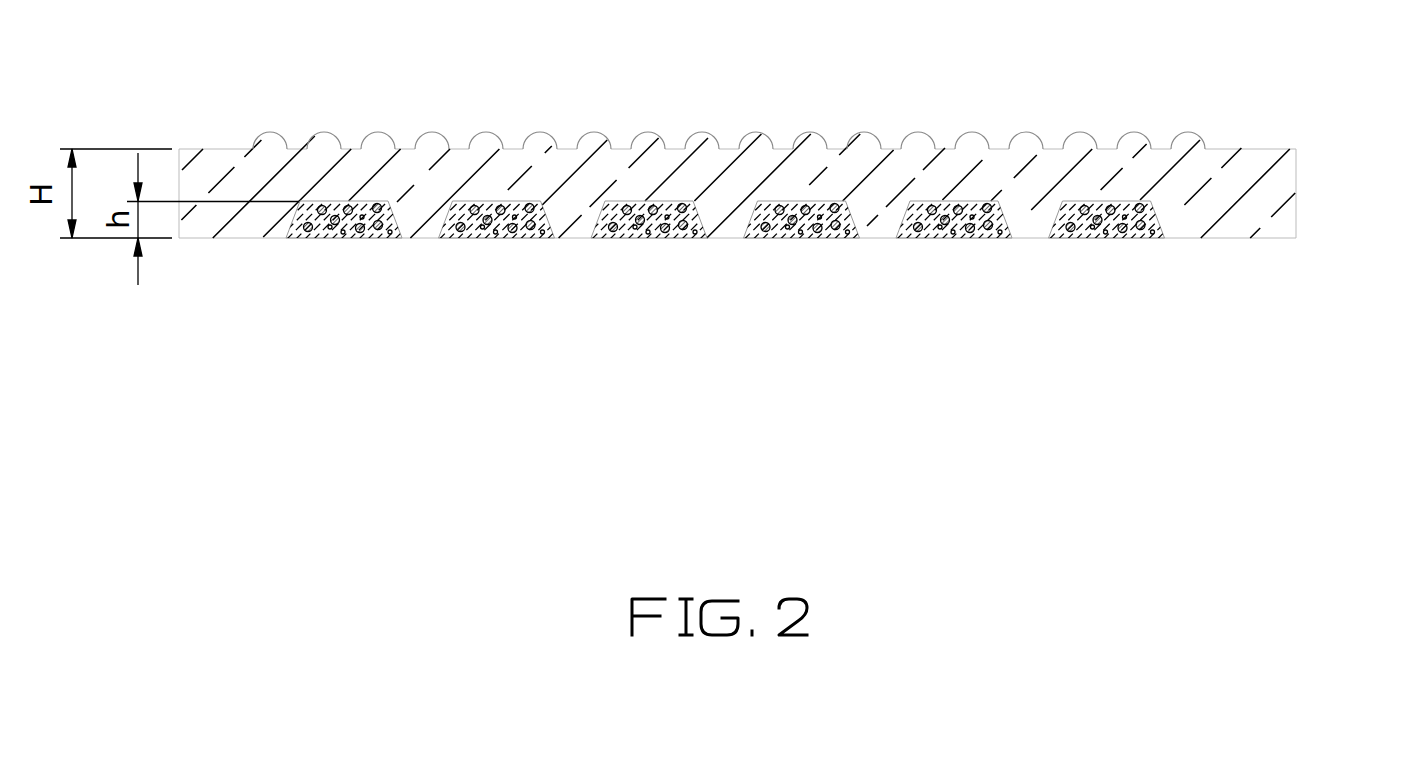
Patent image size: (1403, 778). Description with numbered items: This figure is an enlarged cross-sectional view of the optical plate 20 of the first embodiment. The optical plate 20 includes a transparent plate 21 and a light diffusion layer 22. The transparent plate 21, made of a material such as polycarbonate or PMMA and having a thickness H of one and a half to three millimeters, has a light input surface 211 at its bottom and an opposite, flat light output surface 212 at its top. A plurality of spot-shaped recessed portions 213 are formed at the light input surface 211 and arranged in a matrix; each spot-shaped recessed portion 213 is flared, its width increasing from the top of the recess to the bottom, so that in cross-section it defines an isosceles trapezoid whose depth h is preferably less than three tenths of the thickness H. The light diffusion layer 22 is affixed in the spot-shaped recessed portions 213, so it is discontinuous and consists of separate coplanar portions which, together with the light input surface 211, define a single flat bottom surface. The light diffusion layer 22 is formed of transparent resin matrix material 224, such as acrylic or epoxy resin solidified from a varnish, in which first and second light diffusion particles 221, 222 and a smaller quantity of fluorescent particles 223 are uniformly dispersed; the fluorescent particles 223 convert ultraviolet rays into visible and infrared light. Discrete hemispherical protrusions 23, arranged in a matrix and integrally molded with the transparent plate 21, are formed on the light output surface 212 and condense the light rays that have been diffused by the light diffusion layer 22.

The optical plate 20 is at (590, 88).
The transparent plate 21 is at (1290, 183).
The light input surface 211 is at (1270, 247).
The light output surface 212 is at (1270, 142).
The spot-shaped recessed portions 213 is at (394, 233).
The light diffusion layer 22 is at (558, 365).
The first light diffusion particles 221 is at (378, 234).
The second light diffusion particles 222 is at (299, 231).
The fluorescent particles 223 is at (332, 234).
The transparent resin matrix material 224 is at (355, 233).
The hemispherical protrusions 23 is at (1188, 131).